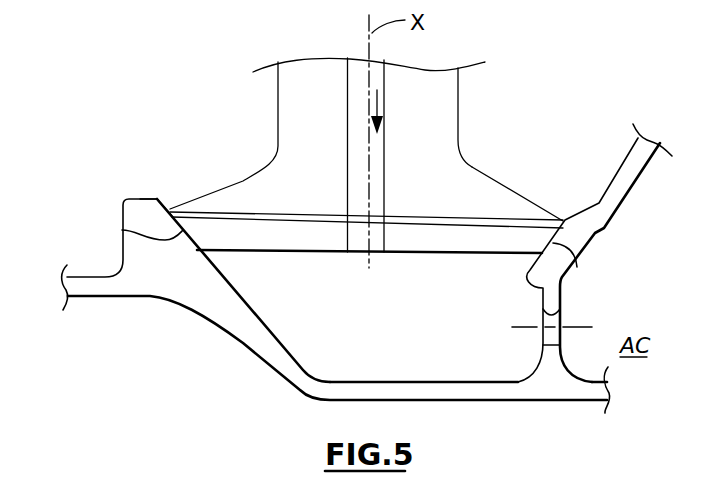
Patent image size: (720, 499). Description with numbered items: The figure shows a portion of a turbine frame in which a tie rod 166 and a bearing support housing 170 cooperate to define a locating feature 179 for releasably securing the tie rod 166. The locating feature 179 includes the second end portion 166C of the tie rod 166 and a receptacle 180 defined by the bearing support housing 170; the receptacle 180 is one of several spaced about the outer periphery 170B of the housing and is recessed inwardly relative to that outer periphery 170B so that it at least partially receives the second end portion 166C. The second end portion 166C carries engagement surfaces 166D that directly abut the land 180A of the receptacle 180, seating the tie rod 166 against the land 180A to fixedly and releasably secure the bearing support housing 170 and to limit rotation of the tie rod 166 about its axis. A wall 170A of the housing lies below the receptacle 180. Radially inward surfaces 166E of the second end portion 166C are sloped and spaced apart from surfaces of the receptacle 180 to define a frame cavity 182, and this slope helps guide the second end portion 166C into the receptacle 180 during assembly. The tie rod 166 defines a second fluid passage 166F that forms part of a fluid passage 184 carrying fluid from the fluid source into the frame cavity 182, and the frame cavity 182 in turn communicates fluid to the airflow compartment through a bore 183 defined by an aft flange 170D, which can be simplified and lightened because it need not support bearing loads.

The tie rod 166 is at (473, 98).
The second end portion 166C is at (476, 168).
The engagement surfaces 166D is at (122, 230).
The radially inward surfaces 166E is at (413, 252).
The second fluid passage 166F is at (386, 198).
The bearing support housing 170 is at (96, 112).
The lower wall 170A is at (246, 343).
The outer periphery 170B is at (127, 197).
The aft flange 170D is at (626, 186).
The locating feature 179 is at (589, 141).
The receptacle 180 is at (169, 190).
The land 180A is at (213, 258).
The frame cavity 182 is at (385, 332).
The bore 183 is at (558, 317).
The fluid passage 184 is at (373, 100).